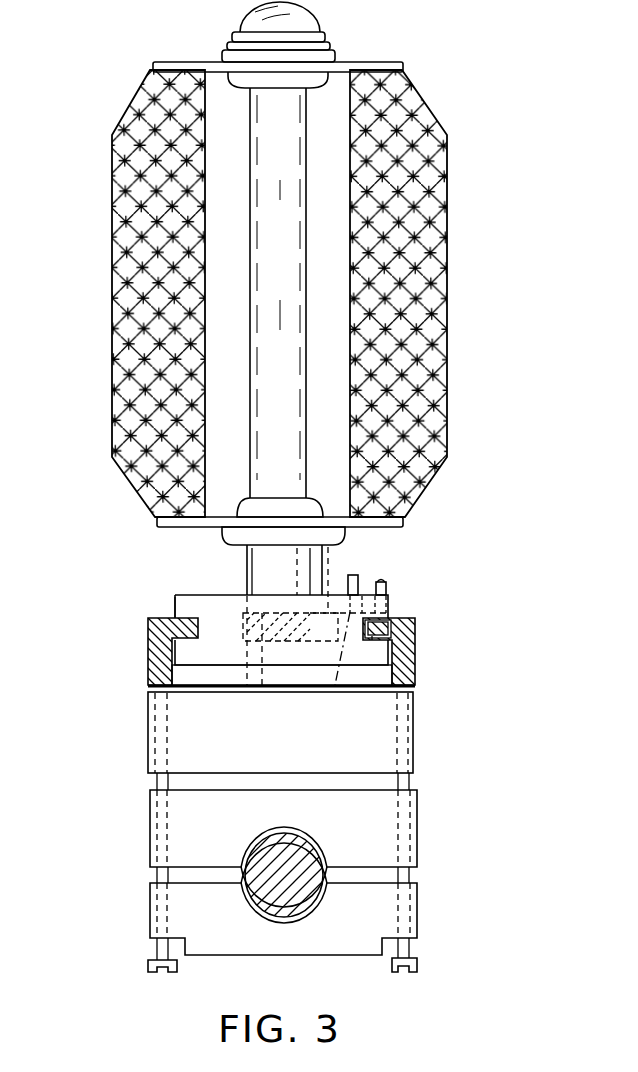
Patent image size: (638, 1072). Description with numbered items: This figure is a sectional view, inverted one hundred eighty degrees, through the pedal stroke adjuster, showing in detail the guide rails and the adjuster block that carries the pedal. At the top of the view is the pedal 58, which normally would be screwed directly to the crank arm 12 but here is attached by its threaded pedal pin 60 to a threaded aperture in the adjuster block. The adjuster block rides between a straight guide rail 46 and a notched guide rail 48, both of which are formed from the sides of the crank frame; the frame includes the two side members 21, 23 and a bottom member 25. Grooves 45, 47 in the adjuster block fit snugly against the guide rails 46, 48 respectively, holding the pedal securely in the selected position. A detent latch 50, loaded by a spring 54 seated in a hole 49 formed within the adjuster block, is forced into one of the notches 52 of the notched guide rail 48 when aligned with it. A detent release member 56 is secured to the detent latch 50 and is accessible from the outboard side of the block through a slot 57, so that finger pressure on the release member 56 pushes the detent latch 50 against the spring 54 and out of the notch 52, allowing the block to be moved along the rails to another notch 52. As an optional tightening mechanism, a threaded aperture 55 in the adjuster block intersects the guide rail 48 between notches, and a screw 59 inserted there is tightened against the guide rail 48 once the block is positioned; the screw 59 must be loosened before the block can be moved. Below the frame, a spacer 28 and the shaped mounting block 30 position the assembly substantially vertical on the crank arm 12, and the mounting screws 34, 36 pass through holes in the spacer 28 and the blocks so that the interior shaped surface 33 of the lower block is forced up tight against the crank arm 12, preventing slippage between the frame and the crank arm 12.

The left crank arm 12 is at (257, 883).
The side member 21 is at (414, 660).
The side member 23 is at (148, 659).
The bottom member 25 is at (362, 677).
The spacer 28 is at (395, 706).
The mounting block 30 is at (417, 828).
The interior shaped surface 33 is at (417, 915).
The mounting screw 34 is at (152, 950).
The mounting screw 36 is at (408, 948).
The groove 45 is at (372, 636).
The straight guide rail 46 is at (370, 618).
The groove 47 is at (178, 690).
The notched guide rail 48 is at (176, 617).
The hole 49 is at (310, 596).
The detent latch 50 is at (335, 687).
The notch 52 is at (414, 620).
The spring 54 is at (262, 690).
The threaded aperture 55 is at (388, 594).
The detent release member 56 is at (355, 575).
The slot 57 is at (328, 568).
The pedal 58 is at (445, 408).
The screw 59 is at (382, 582).
The threaded pedal pin 60 is at (247, 563).